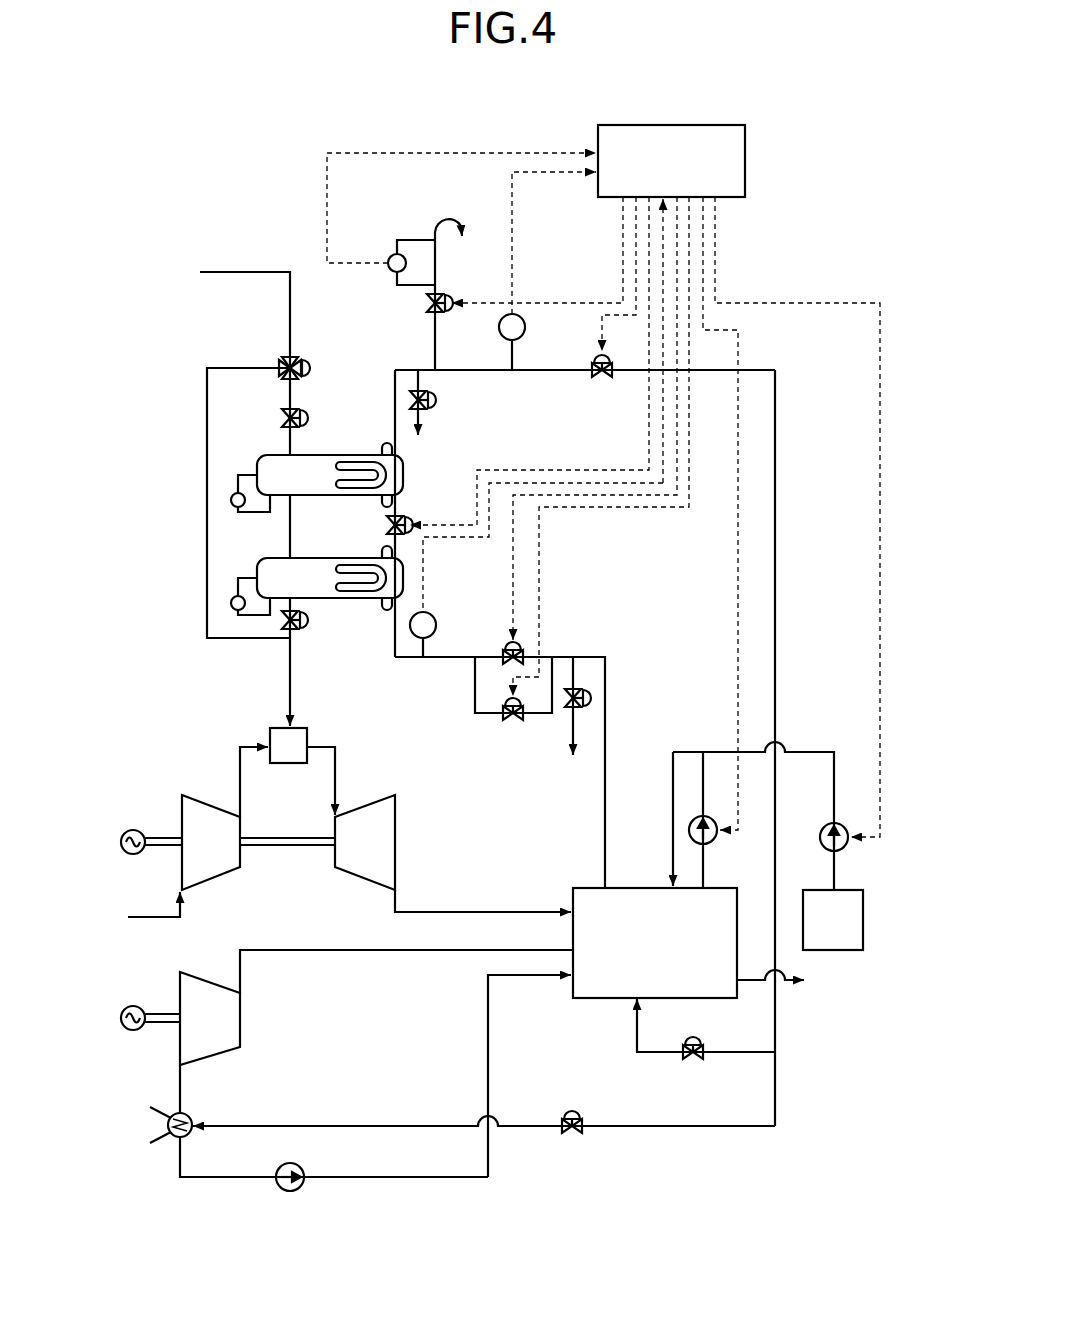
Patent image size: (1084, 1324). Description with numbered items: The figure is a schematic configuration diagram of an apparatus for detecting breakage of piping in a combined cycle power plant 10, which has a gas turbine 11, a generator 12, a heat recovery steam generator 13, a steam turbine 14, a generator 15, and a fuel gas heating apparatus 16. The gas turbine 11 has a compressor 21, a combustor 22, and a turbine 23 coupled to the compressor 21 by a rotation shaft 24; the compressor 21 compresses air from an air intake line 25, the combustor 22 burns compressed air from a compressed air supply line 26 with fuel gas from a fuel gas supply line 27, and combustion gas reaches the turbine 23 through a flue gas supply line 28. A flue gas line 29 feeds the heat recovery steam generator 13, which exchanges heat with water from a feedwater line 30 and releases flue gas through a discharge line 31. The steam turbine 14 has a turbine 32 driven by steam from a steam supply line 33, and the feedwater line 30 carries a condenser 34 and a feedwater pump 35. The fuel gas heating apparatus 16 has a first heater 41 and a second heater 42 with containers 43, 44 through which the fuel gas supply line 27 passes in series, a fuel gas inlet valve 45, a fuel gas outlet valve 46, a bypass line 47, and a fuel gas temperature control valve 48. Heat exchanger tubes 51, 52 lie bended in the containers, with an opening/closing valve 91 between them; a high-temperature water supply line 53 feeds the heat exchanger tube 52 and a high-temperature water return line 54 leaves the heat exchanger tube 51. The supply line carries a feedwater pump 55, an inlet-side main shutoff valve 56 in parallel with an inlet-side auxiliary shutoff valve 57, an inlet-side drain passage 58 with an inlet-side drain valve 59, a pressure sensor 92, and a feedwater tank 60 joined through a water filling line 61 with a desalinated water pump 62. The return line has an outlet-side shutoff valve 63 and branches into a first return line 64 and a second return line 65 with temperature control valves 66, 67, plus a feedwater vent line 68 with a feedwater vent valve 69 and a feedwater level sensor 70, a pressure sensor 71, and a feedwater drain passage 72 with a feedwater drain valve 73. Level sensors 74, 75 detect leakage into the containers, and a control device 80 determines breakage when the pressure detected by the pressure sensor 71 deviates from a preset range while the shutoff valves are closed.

The combined cycle power plant 10 is at (157, 762).
The gas turbine 11 is at (373, 750).
The generator 12 is at (124, 830).
The heat recovery steam generator 13 is at (579, 886).
The steam turbine 14 is at (324, 1030).
The generator 15 is at (122, 1004).
The fuel gas heating apparatus 16 is at (218, 470).
The compressor 21 is at (214, 806).
The combustor 22 is at (292, 764).
The turbine 23 is at (396, 814).
The rotation shaft 24 is at (274, 838).
The air intake line 25 is at (166, 918).
The compressed air supply line 26 is at (238, 752).
The fuel gas supply line 27 is at (302, 660).
The flue gas supply line 28 is at (337, 794).
The flue gas line 29 is at (463, 912).
The feedwater line 30 is at (489, 1044).
The discharge line 31 is at (768, 984).
The turbine 32 is at (240, 1047).
The steam supply line 33 is at (300, 950).
The condenser 34 is at (189, 1112).
The feedwater pump 35 is at (304, 1184).
The first heater 41 is at (256, 458).
The second heater 42 is at (256, 563).
The container 43 is at (335, 456).
The container 44 is at (343, 557).
The fuel gas inlet valve 45 is at (294, 410).
The fuel gas outlet valve 46 is at (302, 626).
The bypass line 47 is at (262, 366).
The fuel gas temperature control valve 48 is at (297, 360).
The heat exchanger tube 51 is at (372, 476).
The heat exchanger tube 52 is at (372, 579).
The high-temperature water supply line 53 is at (600, 775).
The high-temperature water return line 54 is at (548, 372).
The feedwater pump 55 is at (714, 839).
The inlet-side main shutoff valve 56 is at (500, 652).
The inlet-side auxiliary shutoff valve 57 is at (510, 723).
The inlet-side drain passage 58 is at (576, 669).
The inlet-side drain valve 59 is at (582, 706).
The feedwater tank 60 is at (846, 890).
The water filling line 61 is at (830, 750).
The desalinated water pump 62 is at (820, 838).
The outlet-side shutoff valve 63 is at (602, 371).
The first return line 64 is at (742, 1054).
The second return line 65 is at (778, 536).
The temperature control valve 66 is at (694, 1060).
The temperature control valve 67 is at (572, 1135).
The feedwater vent line 68 is at (442, 216).
The feedwater vent valve 69 is at (428, 312).
The feedwater level sensor 70 is at (390, 254).
The pressure sensor 71 is at (526, 328).
The feedwater drain passage 72 is at (425, 389).
The feedwater drain valve 73 is at (426, 421).
The level sensor 74 is at (231, 500).
The level sensor 75 is at (231, 603).
The control device 80 is at (713, 125).
The opening/closing valve 91 is at (408, 522).
The pressure sensor 92 is at (429, 612).